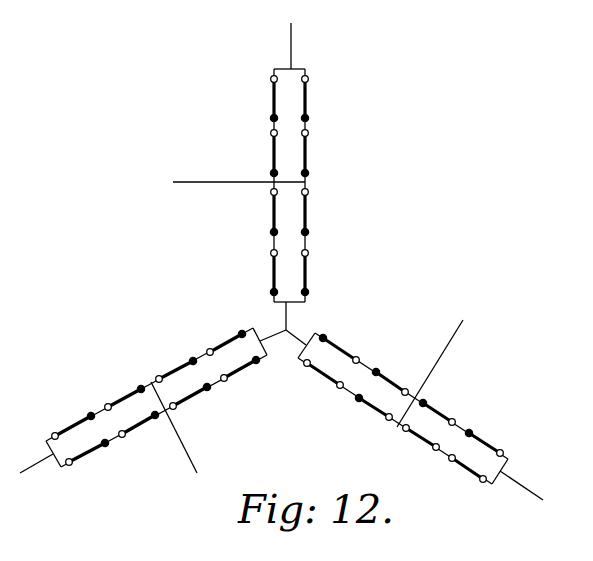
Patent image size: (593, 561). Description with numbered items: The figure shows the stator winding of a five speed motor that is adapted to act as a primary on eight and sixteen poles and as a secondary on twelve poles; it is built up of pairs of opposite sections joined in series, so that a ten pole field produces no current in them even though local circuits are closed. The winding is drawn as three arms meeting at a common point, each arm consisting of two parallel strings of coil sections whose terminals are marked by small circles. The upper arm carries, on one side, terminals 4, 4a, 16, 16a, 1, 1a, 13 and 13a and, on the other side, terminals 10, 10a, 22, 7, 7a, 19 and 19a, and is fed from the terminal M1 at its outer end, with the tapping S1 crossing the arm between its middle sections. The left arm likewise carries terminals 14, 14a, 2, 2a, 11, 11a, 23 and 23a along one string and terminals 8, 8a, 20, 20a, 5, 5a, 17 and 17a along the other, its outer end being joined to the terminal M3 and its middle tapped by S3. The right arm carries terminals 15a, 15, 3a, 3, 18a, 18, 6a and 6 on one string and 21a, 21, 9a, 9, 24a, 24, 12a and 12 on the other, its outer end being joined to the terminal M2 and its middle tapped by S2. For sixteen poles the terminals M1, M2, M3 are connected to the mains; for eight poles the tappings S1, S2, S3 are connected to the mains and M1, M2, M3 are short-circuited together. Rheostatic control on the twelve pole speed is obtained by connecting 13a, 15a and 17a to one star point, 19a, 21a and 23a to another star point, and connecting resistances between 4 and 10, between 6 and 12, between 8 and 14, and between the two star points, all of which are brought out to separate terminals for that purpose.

The winding section terminal 4 is at (266, 79).
The winding section terminal 4a is at (264, 118).
The winding section terminal 16 is at (265, 133).
The winding section terminal 16a is at (264, 173).
The winding section terminal 1 is at (268, 192).
The winding section terminal 1a is at (265, 232).
The winding section terminal 13 is at (265, 253).
The winding section terminal 13a is at (263, 292).
The winding section terminal 10 is at (314, 79).
The winding section terminal 10a is at (318, 118).
The winding section terminal 22 is at (314, 154).
The winding section terminal 7 is at (311, 192).
The winding section terminal 7a is at (314, 233).
The winding section terminal 19 is at (315, 253).
The winding section terminal 19a is at (318, 292).
The eight pole supply terminal S1 is at (231, 179).
The sixteen pole supply terminal M1 is at (305, 44).
The winding section terminal 14 is at (53, 428).
The winding section terminal 14a is at (91, 409).
The winding section terminal 2 is at (106, 400).
The winding section terminal 2a is at (137, 382).
The winding section terminal 11 is at (159, 371).
The winding section terminal 11a is at (194, 354).
The winding section terminal 23 is at (208, 344).
The winding section terminal 23a is at (238, 328).
The winding section terminal 8 is at (74, 470).
The winding section terminal 8a is at (109, 454).
The winding section terminal 20 is at (129, 443).
The winding section terminal 20a is at (161, 427).
The winding section terminal 5 is at (176, 415).
The winding section terminal 5a is at (213, 397).
The winding section terminal 17 is at (231, 386).
The winding section terminal 17a is at (266, 370).
The sixteen pole supply terminal M3 is at (36, 473).
The eight pole supply terminal S3 is at (182, 433).
The winding section terminal 15a is at (334, 333).
The winding section terminal 15 is at (362, 353).
The winding section terminal 3a is at (382, 367).
The winding section terminal 3 is at (408, 385).
The winding section terminal 18a is at (434, 396).
The winding section terminal 18 is at (459, 413).
The winding section terminal 6a is at (475, 427).
The winding section terminal 6 is at (504, 446).
The winding section terminal 21a is at (304, 373).
The winding section terminal 21 is at (334, 394).
The winding section terminal 9a is at (355, 407).
The winding section terminal 9 is at (386, 427).
The winding section terminal 24a is at (408, 440).
The winding section terminal 24 is at (429, 458).
The winding section terminal 12a is at (455, 470).
The winding section terminal 12 is at (479, 489).
The sixteen pole supply terminal M2 is at (535, 489).
The eight pole supply terminal S2 is at (441, 370).